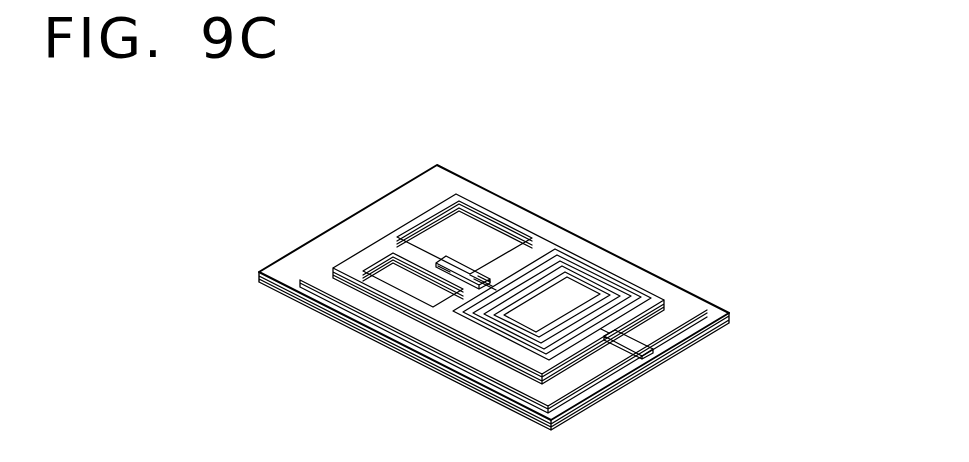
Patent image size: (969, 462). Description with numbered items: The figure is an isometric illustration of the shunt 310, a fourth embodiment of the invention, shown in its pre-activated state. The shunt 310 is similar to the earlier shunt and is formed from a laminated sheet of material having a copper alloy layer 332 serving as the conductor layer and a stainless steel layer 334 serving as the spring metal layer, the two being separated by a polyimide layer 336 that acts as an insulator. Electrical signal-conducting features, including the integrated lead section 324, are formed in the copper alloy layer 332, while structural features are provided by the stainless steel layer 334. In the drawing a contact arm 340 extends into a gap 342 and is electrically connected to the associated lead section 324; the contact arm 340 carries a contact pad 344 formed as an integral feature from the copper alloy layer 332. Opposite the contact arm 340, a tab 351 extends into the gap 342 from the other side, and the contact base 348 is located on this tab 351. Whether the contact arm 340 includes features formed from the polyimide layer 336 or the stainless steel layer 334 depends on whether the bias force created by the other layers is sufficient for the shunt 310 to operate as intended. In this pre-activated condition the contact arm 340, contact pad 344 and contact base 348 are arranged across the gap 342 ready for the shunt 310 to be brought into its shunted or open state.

The shunt 310 is at (678, 190).
The lead section 324 is at (632, 358).
The copper alloy layer 332 is at (578, 298).
The stainless steel layer 334 is at (287, 293).
The polyimide layer 336 is at (420, 258).
The contact arm 340 is at (543, 278).
The gap 342 is at (443, 262).
The contact pad 344 is at (467, 277).
The contact base 348 is at (458, 232).
The tab 351 is at (425, 268).